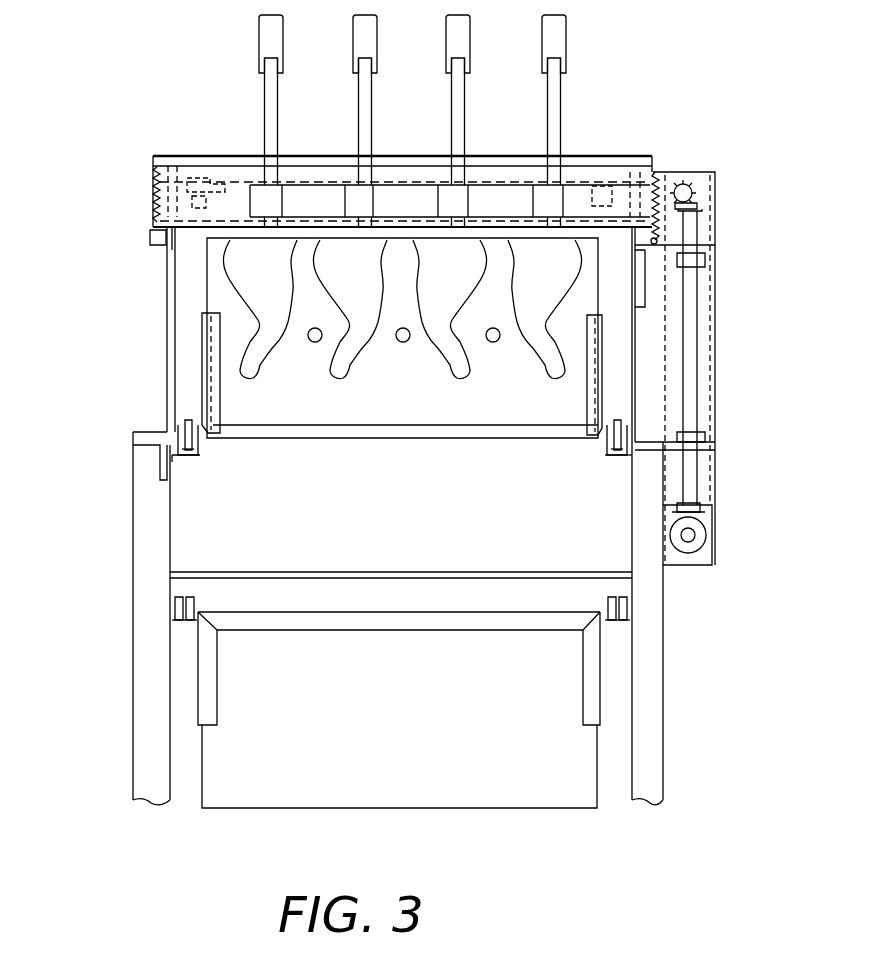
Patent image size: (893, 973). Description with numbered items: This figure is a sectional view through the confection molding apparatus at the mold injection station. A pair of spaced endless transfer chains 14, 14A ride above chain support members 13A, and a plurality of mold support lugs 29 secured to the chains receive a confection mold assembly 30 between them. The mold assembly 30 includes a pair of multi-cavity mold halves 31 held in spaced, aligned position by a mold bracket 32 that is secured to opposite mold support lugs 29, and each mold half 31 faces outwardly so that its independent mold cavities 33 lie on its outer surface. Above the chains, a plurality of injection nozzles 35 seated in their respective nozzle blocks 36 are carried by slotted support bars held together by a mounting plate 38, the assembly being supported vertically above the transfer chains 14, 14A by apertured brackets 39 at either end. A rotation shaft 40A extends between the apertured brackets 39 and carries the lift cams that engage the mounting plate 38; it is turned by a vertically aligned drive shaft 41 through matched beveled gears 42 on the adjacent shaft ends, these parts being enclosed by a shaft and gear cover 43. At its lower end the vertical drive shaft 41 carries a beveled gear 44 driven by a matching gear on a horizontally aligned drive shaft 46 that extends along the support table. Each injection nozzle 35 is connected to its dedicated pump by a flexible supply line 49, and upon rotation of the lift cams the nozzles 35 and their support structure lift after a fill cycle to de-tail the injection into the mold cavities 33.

The chain support member 13A is at (196, 462).
The endless transfer chain 14 is at (178, 432).
The endless transfer chain 14A is at (612, 425).
The mold support lug 29 is at (200, 447).
The confection mold assembly 30 is at (387, 460).
The multi-cavity mold half 31 is at (406, 406).
The mold bracket 32 is at (222, 390).
The independent mold cavity 33 is at (273, 280).
The injection nozzle 35 is at (280, 115).
The nozzle block 36 is at (375, 192).
The mounting plate 38 is at (230, 158).
The apertured bracket 39 is at (165, 295).
The rotation shaft 40A is at (656, 185).
The vertically aligned drive shaft 41 is at (690, 362).
The beveled gear 42 is at (690, 185).
The shaft and gear cover 43 is at (717, 283).
The beveled gear 44 is at (705, 520).
The horizontally aligned drive shaft 46 is at (695, 538).
The flexible supply line 49 is at (566, 55).